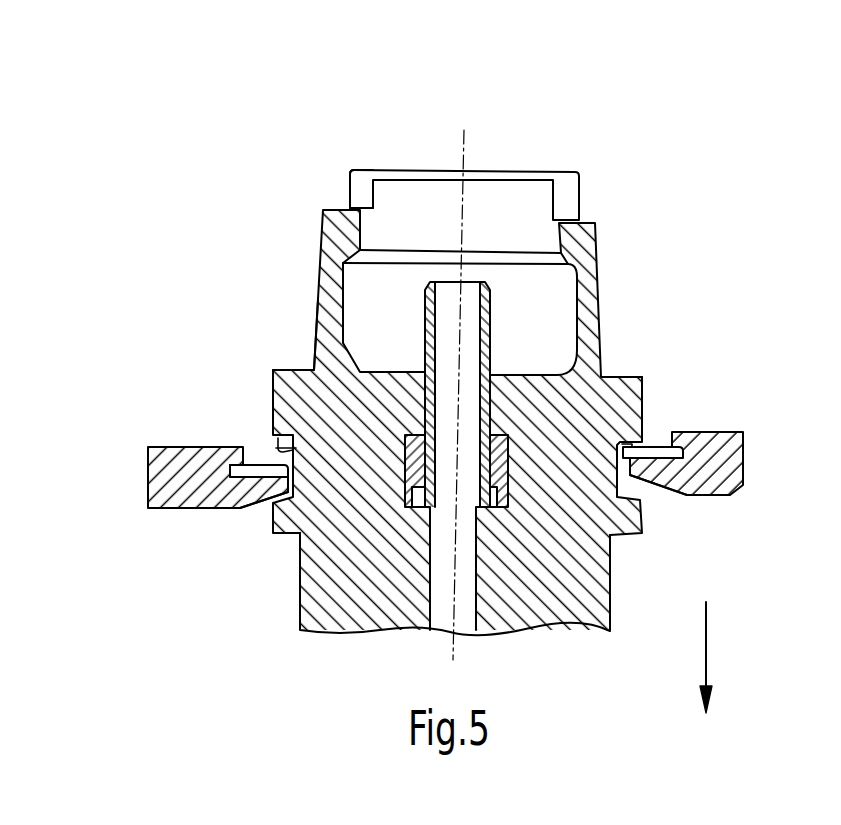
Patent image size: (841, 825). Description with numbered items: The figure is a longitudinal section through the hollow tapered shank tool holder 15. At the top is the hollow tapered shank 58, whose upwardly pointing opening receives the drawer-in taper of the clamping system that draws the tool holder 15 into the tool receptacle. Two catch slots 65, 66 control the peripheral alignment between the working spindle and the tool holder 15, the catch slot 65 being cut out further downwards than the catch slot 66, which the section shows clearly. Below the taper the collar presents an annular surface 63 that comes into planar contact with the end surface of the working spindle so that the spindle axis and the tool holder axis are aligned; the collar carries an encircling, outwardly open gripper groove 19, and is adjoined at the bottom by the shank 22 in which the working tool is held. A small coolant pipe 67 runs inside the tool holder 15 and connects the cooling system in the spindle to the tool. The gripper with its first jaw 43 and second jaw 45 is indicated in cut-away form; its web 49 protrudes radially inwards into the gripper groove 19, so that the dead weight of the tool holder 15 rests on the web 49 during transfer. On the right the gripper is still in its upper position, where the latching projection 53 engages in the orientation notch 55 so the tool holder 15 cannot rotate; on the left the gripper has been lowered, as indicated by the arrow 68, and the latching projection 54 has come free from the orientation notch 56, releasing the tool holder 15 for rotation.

The tool holder 15 is at (337, 572).
The gripper groove 19 is at (642, 493).
The shank 22 is at (612, 570).
The first jaw 43 is at (723, 447).
The second jaw 45 is at (177, 484).
The web 49 is at (262, 500).
The latching projection 53 is at (660, 452).
The latching projection 54 is at (228, 506).
The orientation notch 55 is at (638, 446).
The orientation notch 56 is at (277, 447).
The hollow tapered shank 58 is at (600, 257).
The annular surface 63 is at (293, 367).
The catch slot 65 is at (563, 205).
The catch slot 66 is at (358, 195).
The coolant pipe 67 is at (490, 352).
The arrow 68 is at (706, 653).